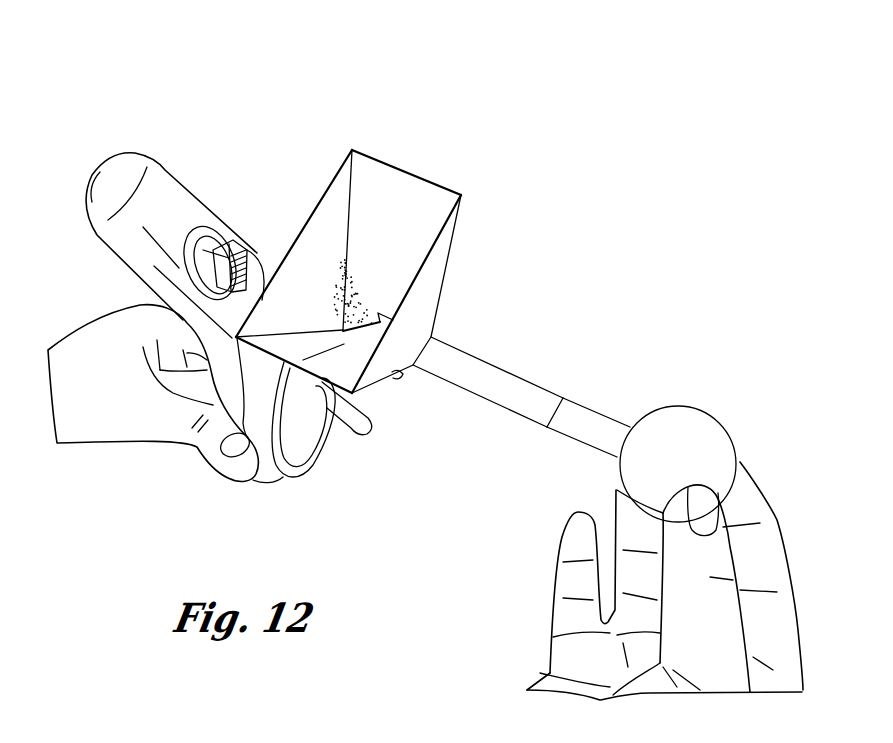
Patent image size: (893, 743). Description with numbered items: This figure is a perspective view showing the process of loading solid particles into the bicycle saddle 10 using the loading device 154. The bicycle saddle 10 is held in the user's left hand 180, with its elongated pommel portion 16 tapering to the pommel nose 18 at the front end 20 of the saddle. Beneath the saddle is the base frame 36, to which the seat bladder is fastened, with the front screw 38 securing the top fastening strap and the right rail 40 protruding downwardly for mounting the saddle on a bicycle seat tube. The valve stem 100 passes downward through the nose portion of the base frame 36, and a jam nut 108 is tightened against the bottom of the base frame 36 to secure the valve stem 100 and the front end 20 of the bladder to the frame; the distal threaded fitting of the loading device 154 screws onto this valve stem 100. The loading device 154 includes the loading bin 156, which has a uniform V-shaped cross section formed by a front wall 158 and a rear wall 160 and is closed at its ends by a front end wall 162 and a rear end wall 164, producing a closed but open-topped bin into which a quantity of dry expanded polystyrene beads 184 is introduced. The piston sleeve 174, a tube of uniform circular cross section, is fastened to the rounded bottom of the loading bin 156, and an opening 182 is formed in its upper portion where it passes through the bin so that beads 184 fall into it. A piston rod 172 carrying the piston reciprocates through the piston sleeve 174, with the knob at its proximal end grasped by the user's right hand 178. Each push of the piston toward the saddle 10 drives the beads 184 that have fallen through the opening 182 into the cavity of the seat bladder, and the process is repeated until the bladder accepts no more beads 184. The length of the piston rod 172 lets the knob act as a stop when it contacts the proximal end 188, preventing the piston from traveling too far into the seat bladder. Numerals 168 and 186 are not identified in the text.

The bicycle saddle 10 is at (198, 90).
The pommel portion 16 is at (118, 262).
The pommel nose 18 is at (83, 205).
The front end 20 is at (102, 160).
The base frame 36 is at (207, 463).
The front screw 38 is at (306, 468).
The right rail 40 is at (372, 425).
The valve stem 100 is at (203, 250).
The jam nut 108 is at (217, 222).
The loading device 154 is at (336, 153).
The loading bin 156 is at (457, 190).
The front wall 158 is at (294, 361).
The rear wall 160 is at (372, 150).
The front end wall 162 is at (448, 250).
The rear end wall 164 is at (322, 198).
The nut 168 is at (270, 262).
The piston rod 172 is at (568, 437).
The piston sleeve 174 is at (500, 410).
The right hand 178 is at (538, 662).
The left hand 180 is at (66, 447).
The opening 182 is at (376, 313).
The expanded polystyrene beads 184 is at (355, 272).
The ball 186 is at (647, 408).
The proximal end 188 is at (573, 394).